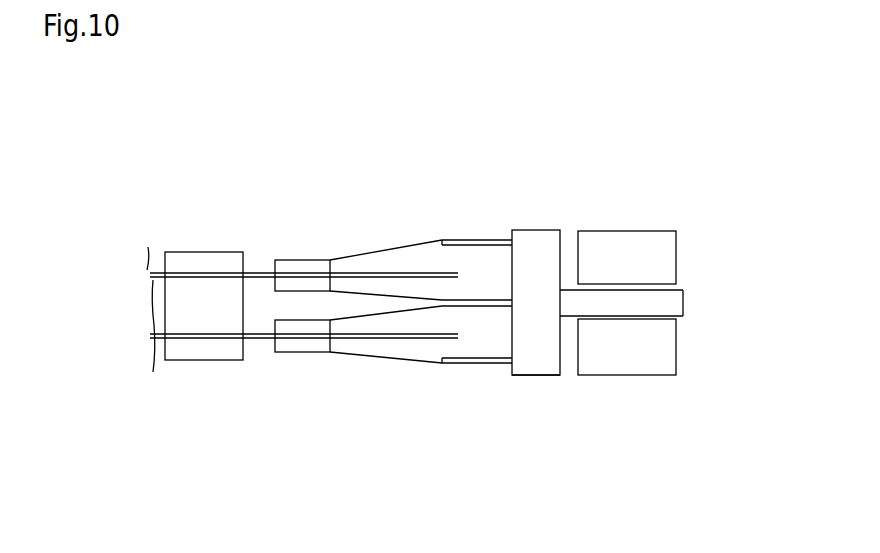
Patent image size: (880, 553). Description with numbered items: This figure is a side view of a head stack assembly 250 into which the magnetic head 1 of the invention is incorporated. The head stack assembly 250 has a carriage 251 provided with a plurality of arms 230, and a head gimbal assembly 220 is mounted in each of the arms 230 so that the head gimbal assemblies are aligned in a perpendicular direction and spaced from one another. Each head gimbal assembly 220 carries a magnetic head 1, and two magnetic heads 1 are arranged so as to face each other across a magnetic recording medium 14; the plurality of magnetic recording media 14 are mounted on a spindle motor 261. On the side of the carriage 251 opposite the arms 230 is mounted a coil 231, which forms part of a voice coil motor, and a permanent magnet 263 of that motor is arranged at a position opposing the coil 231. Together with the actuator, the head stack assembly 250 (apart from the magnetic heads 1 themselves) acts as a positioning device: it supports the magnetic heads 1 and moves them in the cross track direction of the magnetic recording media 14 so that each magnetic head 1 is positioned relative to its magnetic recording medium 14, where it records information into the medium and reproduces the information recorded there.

The magnetic head 1 is at (267, 262).
The magnetic recording medium 14 is at (253, 270).
The head gimbal assembly 220 is at (378, 250).
The arm 230 is at (455, 240).
The coil 231 is at (672, 303).
The head stack assembly 250 is at (537, 207).
The carriage 251 is at (537, 375).
The spindle motor 261 is at (185, 260).
The permanent magnet 263 is at (619, 231).